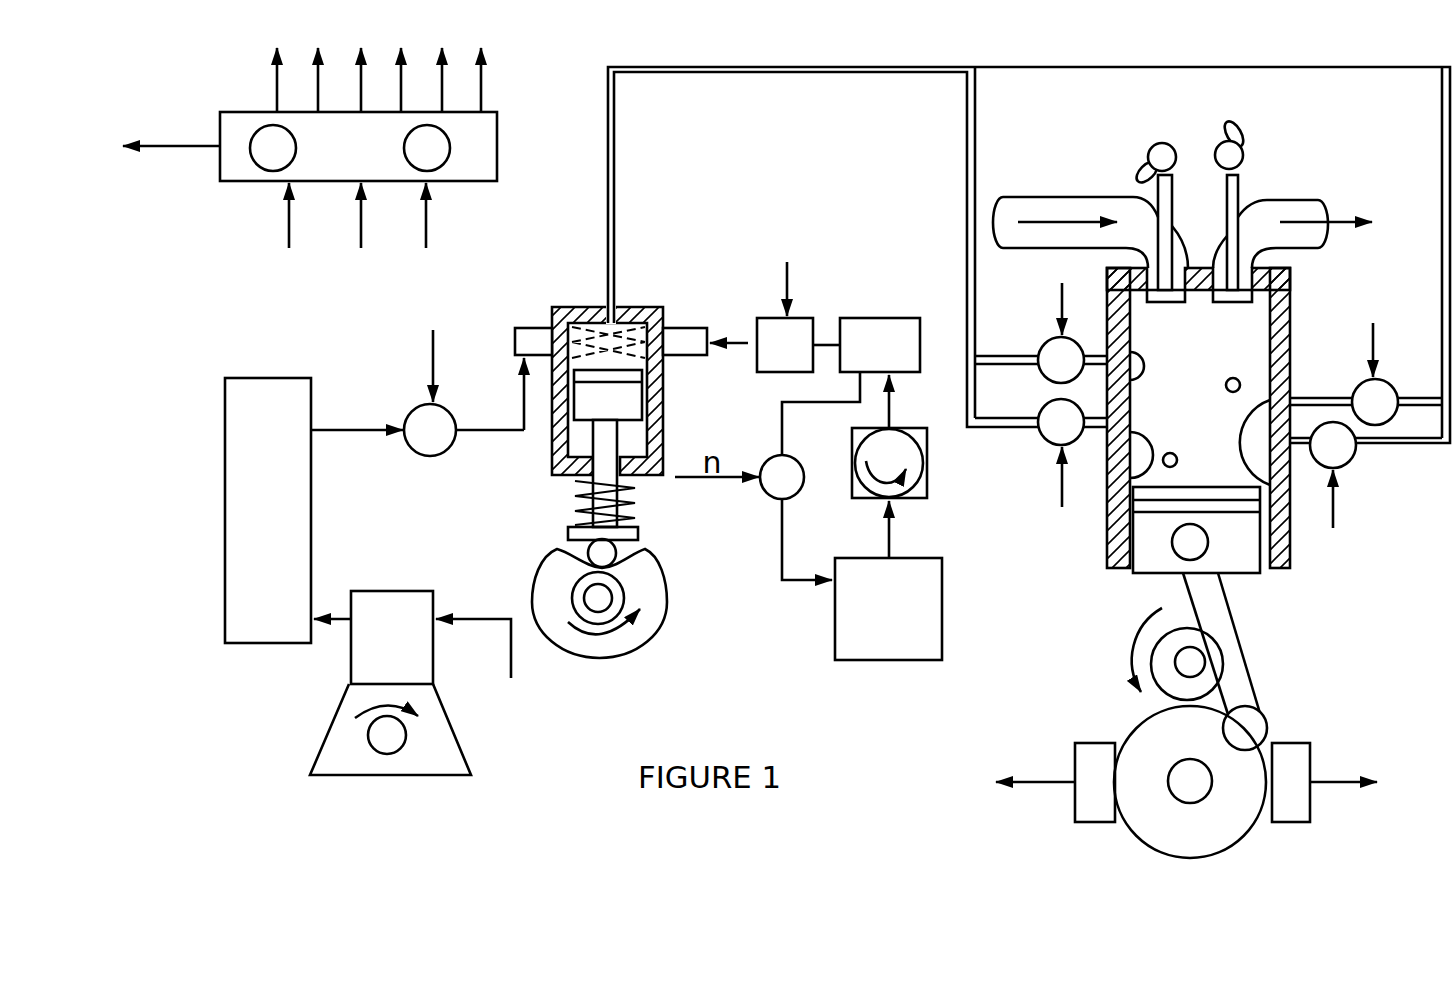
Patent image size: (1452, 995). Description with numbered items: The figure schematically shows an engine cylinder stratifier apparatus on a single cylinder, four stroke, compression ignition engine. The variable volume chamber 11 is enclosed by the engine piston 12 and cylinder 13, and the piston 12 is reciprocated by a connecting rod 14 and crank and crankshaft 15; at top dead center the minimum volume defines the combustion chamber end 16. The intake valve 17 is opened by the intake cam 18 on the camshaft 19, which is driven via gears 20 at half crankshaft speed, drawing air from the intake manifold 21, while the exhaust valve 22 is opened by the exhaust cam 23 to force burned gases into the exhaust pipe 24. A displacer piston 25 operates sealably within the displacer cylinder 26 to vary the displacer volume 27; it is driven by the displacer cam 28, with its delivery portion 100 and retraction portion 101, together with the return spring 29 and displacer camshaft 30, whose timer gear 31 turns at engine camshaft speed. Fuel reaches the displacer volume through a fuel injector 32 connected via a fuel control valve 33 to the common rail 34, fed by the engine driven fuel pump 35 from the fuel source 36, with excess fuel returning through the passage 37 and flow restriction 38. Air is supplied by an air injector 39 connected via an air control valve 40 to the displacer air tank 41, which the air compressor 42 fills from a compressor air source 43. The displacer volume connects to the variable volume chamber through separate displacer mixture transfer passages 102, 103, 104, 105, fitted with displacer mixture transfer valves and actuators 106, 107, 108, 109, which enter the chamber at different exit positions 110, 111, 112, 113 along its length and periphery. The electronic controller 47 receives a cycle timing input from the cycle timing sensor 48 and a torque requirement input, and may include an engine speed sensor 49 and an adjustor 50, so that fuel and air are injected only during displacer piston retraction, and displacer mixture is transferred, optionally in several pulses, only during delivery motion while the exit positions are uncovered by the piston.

The variable volume chamber 11 is at (1230, 358).
The engine piston 12 is at (1235, 548).
The cylinder 13 is at (1242, 380).
The connecting rod 14 is at (1222, 661).
The crank and crankshaft 15 is at (1190, 667).
The combustion chamber end 16 is at (1252, 318).
The intake valve 17 is at (1165, 222).
The intake cam 18 is at (1162, 152).
The camshaft 19 is at (1188, 786).
The gears 20 is at (1148, 737).
The intake manifold 21 is at (1093, 205).
The exhaust valve 22 is at (1238, 207).
The exhaust cam 23 is at (1234, 156).
The exhaust pipe 24 is at (1300, 214).
The displacer piston 25 is at (555, 420).
The displacer cylinder 26 is at (575, 400).
The displacer volume 27 is at (628, 337).
The displacer cam 28 is at (605, 645).
The return spring 29 is at (622, 493).
The displacer camshaft 30 is at (596, 600).
The timer gear 31 is at (628, 592).
The fuel injector 32 is at (675, 345).
The fuel control valve 33 is at (770, 341).
The common rail 34 is at (887, 345).
The fuel pump 35 is at (870, 462).
The fuel source 36 is at (850, 608).
The passage 37 is at (796, 577).
The flow restriction 38 is at (796, 463).
The air injector 39 is at (525, 347).
The air control valve 40 is at (415, 410).
The displacer air tank 41 is at (265, 400).
The air compressor 42 is at (368, 649).
The compressor air source 43 is at (479, 621).
The electronic controller 47 is at (235, 168).
The cycle timing sensor 48 is at (1090, 792).
The engine speed sensor 49 is at (1295, 795).
The adjustor 50 is at (422, 153).
The delivery portion 100 is at (640, 565).
The retraction portion 101 is at (540, 571).
The displacer mixture transfer passage 102 is at (982, 355).
The displacer mixture transfer passage 103 is at (985, 430).
The displacer mixture transfer passage 104 is at (1419, 446).
The displacer mixture transfer passage 105 is at (1415, 398).
The displacer mixture transfer valve and actuator 106 is at (1048, 350).
The displacer mixture transfer valve and actuator 107 is at (1048, 440).
The displacer mixture transfer valve and actuator 108 is at (1345, 465).
The displacer mixture transfer valve and actuator 109 is at (1360, 380).
The exit position 110 is at (1125, 385).
The exit position 111 is at (1125, 500).
The exit position 112 is at (1285, 540).
The exit position 113 is at (1292, 480).